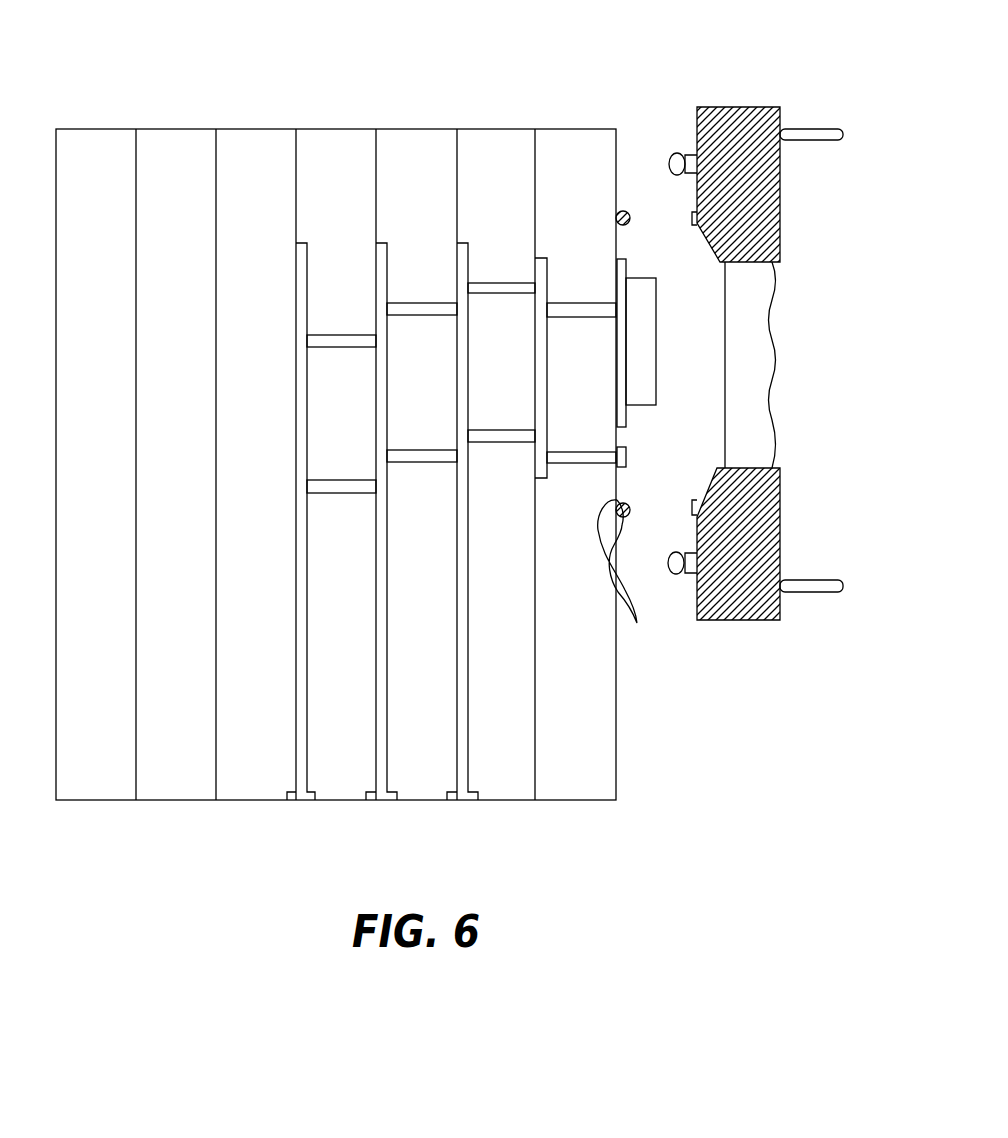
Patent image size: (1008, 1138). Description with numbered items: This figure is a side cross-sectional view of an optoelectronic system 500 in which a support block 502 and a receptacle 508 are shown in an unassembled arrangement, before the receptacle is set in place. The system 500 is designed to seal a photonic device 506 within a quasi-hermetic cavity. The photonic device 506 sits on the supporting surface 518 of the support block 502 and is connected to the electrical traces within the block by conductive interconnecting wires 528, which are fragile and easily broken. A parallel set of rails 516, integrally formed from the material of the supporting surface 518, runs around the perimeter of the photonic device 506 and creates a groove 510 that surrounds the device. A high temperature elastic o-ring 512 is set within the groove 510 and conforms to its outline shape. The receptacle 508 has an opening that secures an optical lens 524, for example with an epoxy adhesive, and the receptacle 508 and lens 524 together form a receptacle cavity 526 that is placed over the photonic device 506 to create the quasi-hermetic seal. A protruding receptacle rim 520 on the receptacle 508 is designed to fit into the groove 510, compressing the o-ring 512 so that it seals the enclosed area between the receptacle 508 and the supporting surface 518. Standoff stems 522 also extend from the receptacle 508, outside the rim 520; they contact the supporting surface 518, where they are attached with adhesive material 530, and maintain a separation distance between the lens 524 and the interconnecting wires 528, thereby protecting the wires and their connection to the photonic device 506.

The optoelectronic system 500 is at (541, 46).
The support block 502 is at (188, 128).
The photonic device 506 is at (657, 292).
The receptacle 508 is at (748, 106).
The groove 510 is at (607, 211).
The o-ring 512 is at (630, 226).
The rails 516 is at (630, 577).
The supporting surface 518 is at (617, 770).
The receptacle rim 520 is at (697, 210).
The standoff stems 522 is at (688, 576).
The optical lens 524 is at (773, 445).
The receptacle cavity 526 is at (716, 343).
The interconnecting wires 528 is at (645, 432).
The adhesive material 530 is at (675, 152).